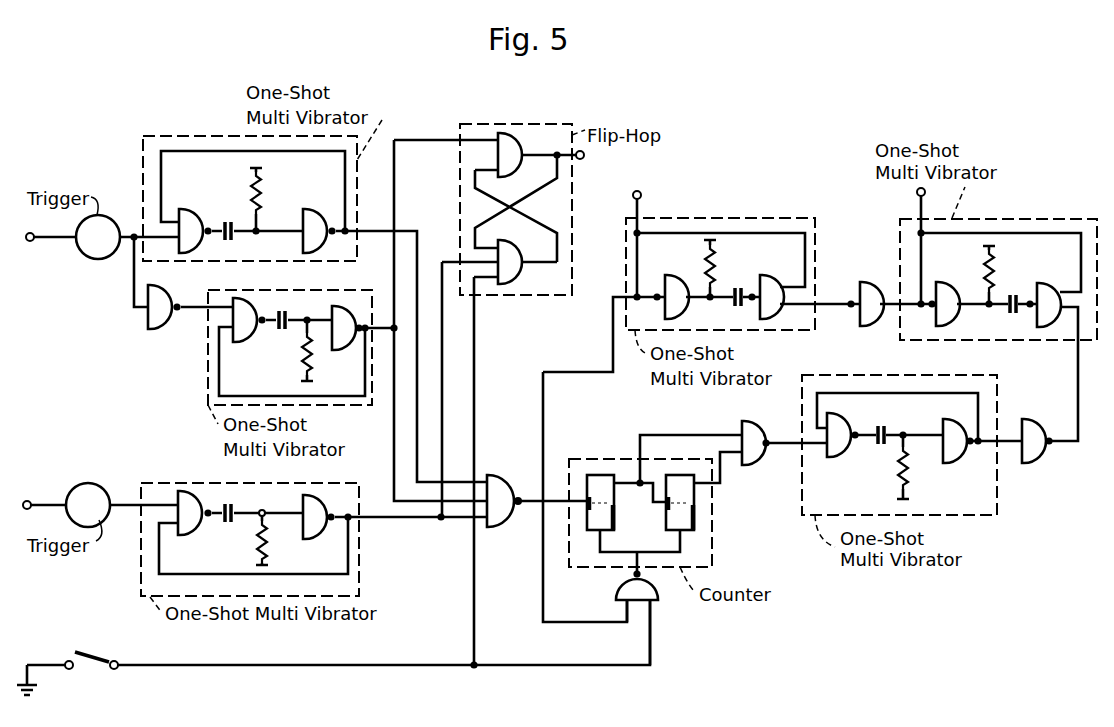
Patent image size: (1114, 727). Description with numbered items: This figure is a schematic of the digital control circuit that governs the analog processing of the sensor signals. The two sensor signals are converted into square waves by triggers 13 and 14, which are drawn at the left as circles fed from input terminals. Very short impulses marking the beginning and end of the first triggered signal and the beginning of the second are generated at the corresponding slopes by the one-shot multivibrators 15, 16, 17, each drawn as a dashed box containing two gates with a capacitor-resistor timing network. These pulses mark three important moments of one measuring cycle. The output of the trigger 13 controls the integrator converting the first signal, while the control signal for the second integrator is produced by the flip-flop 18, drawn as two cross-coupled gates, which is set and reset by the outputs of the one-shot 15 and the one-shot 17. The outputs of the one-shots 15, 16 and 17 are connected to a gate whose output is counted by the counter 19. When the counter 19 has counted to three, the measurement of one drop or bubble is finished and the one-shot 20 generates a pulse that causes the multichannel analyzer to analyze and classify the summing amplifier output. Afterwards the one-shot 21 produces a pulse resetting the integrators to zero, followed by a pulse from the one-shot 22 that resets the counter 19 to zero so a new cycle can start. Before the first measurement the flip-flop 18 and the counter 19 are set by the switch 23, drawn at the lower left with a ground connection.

The trigger 13 is at (103, 258).
The trigger 14 is at (94, 493).
The one-shot multivibrator 15 is at (333, 290).
The one-shot multivibrator 16 is at (233, 140).
The one-shot multivibrator 17 is at (210, 487).
The flip-flop 18 is at (515, 123).
The counter 19 is at (592, 457).
The one-shot 20 is at (837, 380).
The one-shot 21 is at (1003, 223).
The one-shot 22 is at (738, 217).
The switch 23 is at (87, 651).